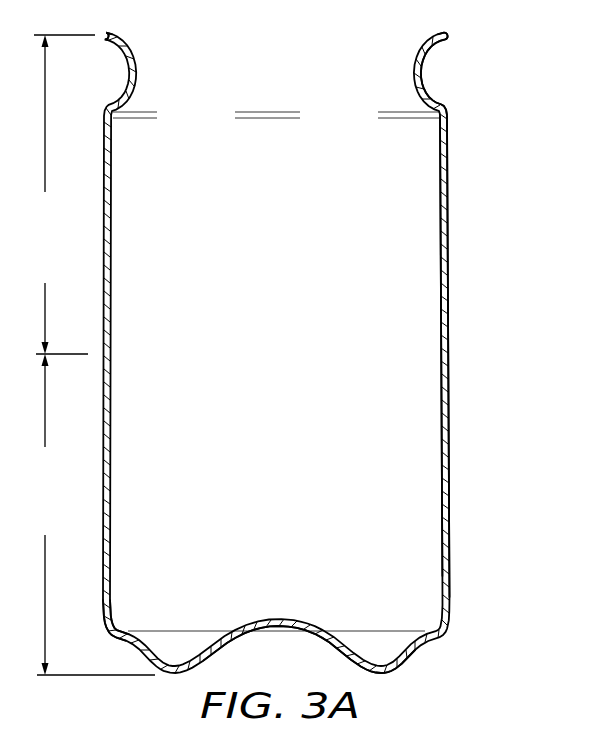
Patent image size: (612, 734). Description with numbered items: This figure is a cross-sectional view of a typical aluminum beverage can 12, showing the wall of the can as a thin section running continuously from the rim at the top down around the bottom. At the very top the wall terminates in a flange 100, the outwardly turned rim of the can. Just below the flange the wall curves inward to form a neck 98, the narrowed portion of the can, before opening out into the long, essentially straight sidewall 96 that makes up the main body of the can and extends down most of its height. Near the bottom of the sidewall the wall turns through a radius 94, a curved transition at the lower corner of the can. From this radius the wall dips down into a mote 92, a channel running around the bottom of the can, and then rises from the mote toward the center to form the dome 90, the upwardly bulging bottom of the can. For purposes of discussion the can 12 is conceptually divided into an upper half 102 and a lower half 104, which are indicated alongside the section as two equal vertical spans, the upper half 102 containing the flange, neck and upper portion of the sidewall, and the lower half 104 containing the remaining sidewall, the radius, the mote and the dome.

The aluminum beverage can 12 is at (470, 250).
The dome 90 is at (277, 601).
The mote 92 is at (382, 646).
The radius 94 is at (126, 612).
The sidewall 96 is at (440, 204).
The neck 98 is at (449, 97).
The flange 100 is at (463, 39).
The upper half 102 is at (54, 194).
The lower half 104 is at (86, 514).